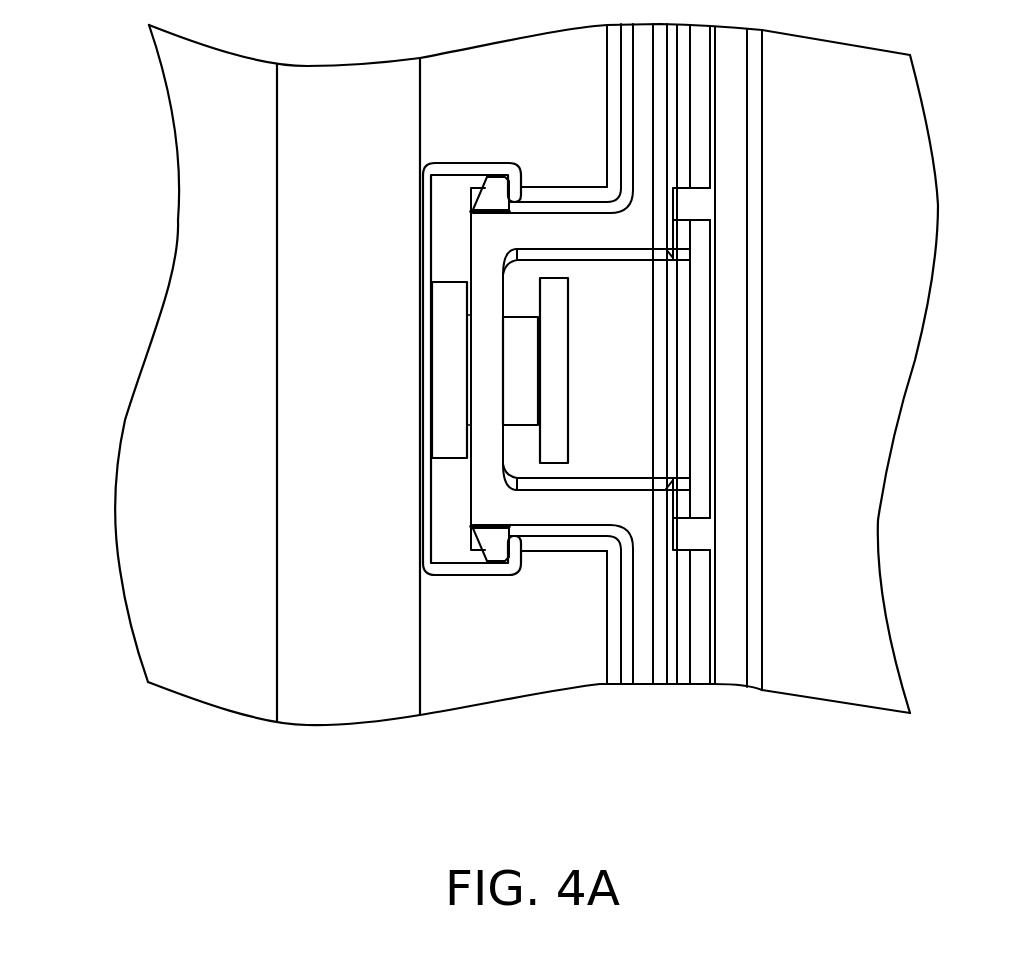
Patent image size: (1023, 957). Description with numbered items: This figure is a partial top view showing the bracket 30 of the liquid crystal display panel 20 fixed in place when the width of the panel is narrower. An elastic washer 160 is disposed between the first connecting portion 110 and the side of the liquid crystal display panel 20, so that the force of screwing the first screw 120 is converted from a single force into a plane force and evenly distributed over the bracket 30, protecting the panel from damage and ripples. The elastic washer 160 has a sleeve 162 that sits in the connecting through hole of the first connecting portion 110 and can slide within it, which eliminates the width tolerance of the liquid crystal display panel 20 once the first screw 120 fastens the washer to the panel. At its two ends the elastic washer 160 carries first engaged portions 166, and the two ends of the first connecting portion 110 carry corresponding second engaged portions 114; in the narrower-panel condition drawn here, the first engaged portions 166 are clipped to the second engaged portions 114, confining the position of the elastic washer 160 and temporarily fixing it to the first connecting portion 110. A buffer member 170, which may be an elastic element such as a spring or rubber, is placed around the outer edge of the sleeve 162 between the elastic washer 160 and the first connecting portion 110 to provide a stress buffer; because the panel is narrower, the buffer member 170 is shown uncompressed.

The liquid crystal display panel 20 is at (215, 680).
The bracket 30 is at (322, 695).
The first connecting portion 110 is at (643, 668).
The second engaged portion 114 is at (505, 523).
The first screw 120 is at (553, 368).
The elastic washer 160 is at (482, 573).
The sleeve 162 is at (522, 408).
The first engaged portion 166 is at (513, 555).
The buffer member 170 is at (445, 447).